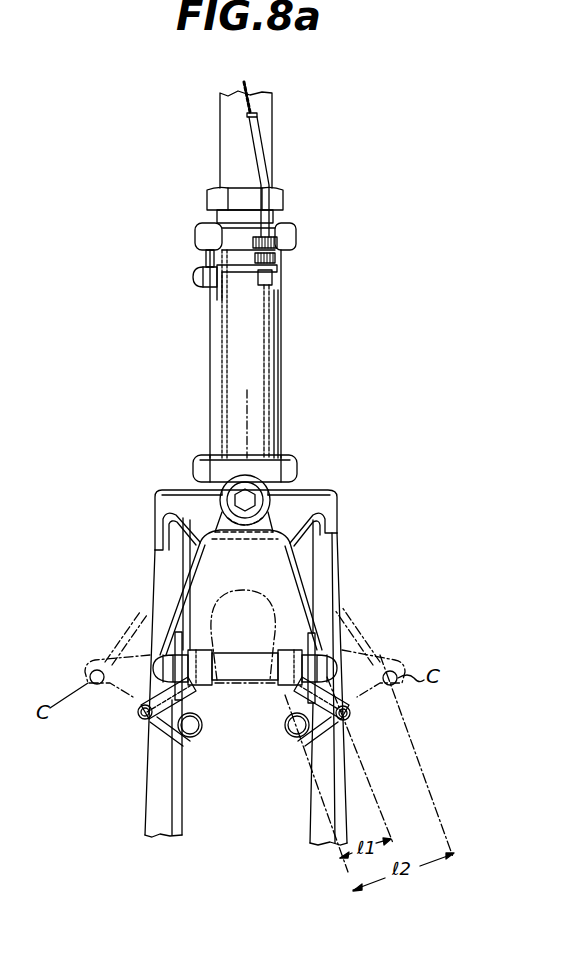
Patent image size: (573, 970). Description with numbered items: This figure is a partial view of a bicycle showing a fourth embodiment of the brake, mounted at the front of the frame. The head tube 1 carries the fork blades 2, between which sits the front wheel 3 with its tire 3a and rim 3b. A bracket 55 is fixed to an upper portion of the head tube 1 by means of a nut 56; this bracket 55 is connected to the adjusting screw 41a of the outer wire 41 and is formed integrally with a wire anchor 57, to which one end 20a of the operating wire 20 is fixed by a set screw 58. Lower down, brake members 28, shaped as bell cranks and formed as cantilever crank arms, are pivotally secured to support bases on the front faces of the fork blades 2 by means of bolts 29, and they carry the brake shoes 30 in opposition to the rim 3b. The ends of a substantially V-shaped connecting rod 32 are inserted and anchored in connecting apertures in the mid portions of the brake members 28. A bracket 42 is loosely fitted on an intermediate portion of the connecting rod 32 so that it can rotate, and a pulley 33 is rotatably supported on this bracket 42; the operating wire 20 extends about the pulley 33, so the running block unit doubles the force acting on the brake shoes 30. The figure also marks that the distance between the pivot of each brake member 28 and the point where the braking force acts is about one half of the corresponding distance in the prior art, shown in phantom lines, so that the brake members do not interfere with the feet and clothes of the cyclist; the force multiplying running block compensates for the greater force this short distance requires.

The head tube 1 is at (283, 329).
The fork blades 2 is at (337, 570).
The front wheel 3 is at (205, 587).
The tire 3a is at (262, 590).
The rim 3b is at (255, 686).
The operating wire 20 is at (222, 373).
The end of operating wire 20a is at (196, 246).
The brake members 28 is at (148, 719).
The bolts 29 is at (193, 737).
The brake shoes 30 is at (205, 686).
The connecting rod 32 is at (185, 603).
The pulley 33 is at (268, 505).
The outer wire 41 is at (267, 170).
The adjusting screw 41a is at (278, 257).
The bracket 42 is at (220, 517).
The bracket 55 is at (215, 222).
The nut 56 is at (207, 192).
The wire anchor 57 is at (214, 276).
The set screw 58 is at (193, 277).